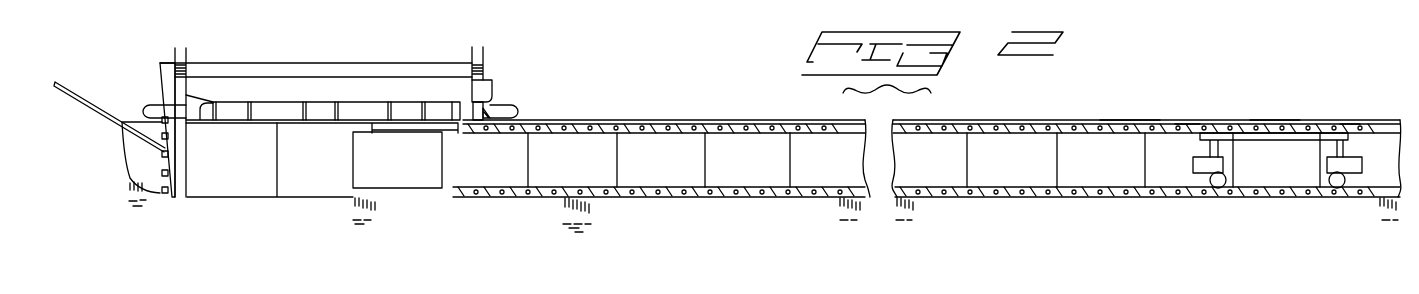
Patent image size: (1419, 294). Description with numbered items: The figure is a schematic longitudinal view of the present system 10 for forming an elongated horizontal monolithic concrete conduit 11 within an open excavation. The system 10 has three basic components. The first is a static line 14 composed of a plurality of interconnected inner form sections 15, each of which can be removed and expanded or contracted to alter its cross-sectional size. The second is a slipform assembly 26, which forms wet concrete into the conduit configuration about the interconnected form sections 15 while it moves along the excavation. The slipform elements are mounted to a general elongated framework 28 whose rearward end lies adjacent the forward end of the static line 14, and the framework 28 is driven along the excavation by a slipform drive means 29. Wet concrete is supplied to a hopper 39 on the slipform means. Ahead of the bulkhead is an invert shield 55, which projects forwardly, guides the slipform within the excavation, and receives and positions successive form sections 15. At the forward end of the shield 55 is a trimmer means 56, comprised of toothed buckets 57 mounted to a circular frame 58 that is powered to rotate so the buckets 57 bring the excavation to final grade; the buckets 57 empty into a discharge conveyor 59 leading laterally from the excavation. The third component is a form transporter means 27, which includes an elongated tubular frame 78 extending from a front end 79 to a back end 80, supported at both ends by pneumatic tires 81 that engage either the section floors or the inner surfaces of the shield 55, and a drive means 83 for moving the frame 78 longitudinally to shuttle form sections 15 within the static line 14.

The system 10 is at (945, 122).
The monolithic concrete conduit 11 is at (1128, 125).
The static line 14 is at (777, 177).
The form sections 15 is at (622, 143).
The slipform assembly 26 is at (491, 112).
The form transporter means 27 is at (1270, 122).
The elongated framework 28 is at (382, 64).
The slipform drive means 29 is at (163, 97).
The hopper 39 is at (484, 114).
The invert shield 55 is at (300, 177).
The trimmer means 56 is at (158, 197).
The toothed buckets 57 is at (162, 172).
The circular frame 58 is at (180, 172).
The discharge conveyor 59 is at (122, 127).
The elongated frame 78 is at (1297, 141).
The front end 79 is at (1188, 123).
The back end 80 is at (1349, 125).
The pneumatic tires 81 is at (1225, 188).
The drive means 83 is at (1193, 163).